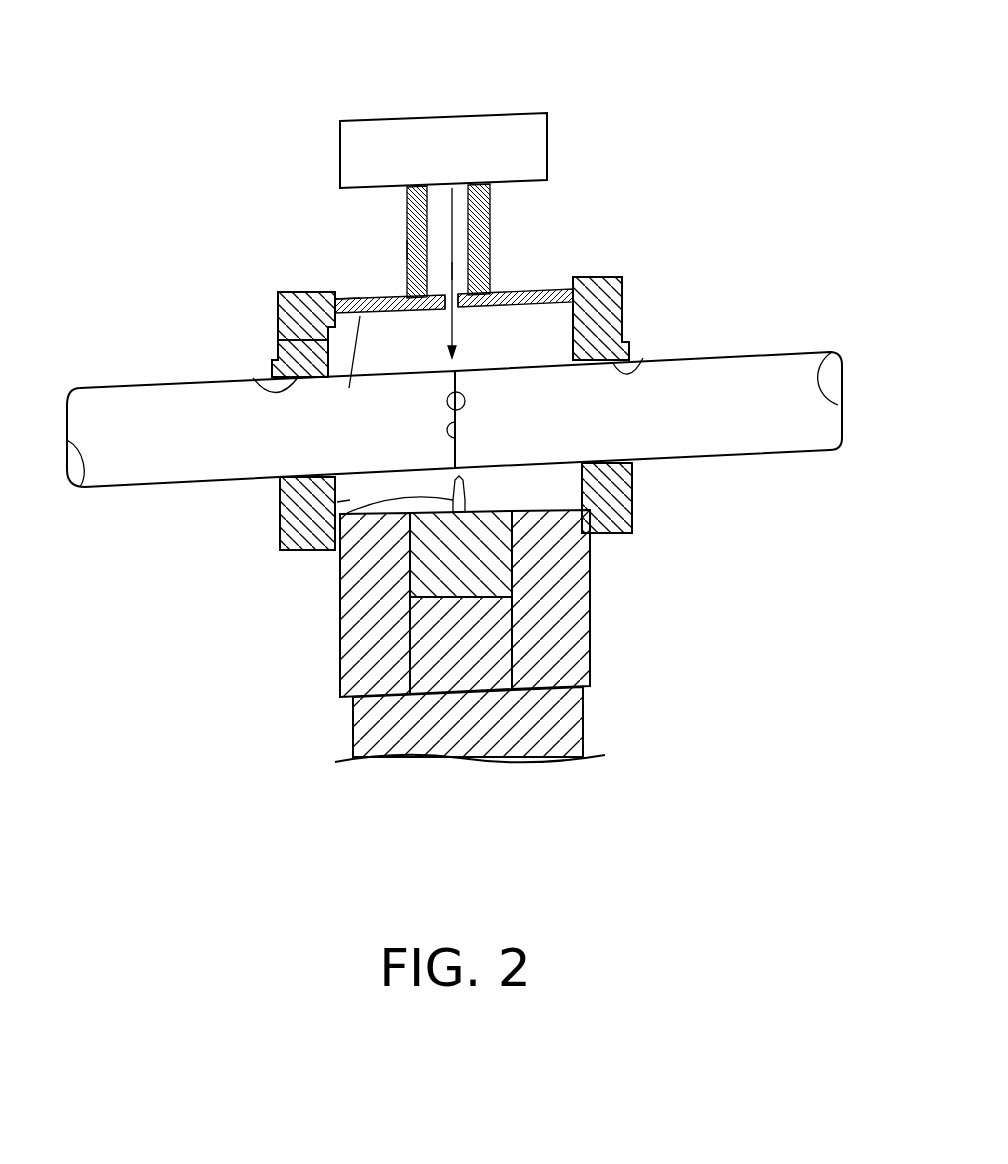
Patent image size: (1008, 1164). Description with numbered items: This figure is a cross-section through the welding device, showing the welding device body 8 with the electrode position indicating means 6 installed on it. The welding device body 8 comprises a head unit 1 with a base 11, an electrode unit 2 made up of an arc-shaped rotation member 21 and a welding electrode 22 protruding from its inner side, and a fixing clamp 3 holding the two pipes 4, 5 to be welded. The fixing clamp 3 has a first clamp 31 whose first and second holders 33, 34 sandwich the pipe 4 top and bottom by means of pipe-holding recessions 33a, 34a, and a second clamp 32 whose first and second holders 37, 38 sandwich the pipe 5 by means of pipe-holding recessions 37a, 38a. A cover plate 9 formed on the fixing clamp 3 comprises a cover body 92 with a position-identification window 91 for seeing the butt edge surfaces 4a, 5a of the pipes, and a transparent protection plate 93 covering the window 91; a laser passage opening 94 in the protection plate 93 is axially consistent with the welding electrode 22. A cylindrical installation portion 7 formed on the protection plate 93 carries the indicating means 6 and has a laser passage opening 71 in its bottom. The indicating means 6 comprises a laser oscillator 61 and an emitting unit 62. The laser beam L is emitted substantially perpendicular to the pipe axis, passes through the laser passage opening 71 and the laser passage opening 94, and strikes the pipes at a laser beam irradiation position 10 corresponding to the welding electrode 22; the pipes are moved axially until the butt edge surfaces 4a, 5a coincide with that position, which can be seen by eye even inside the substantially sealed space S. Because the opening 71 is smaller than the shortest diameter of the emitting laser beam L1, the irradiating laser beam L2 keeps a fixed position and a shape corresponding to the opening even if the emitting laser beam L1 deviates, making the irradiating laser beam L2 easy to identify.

The head unit 1 is at (592, 647).
The electrode unit 2 is at (478, 586).
The fixing clamp 3 is at (661, 273).
The pipe 4 is at (140, 400).
The butt edge surface 4a is at (440, 405).
The pipe 5 is at (772, 375).
The butt edge surface 5a is at (465, 418).
The electrode position indicating means 6 is at (489, 154).
The installation portion 7 is at (406, 252).
The welding device body 8 is at (227, 283).
The cover plate 9 is at (434, 268).
The laser beam irradiation position 10 is at (462, 360).
The base 11 is at (592, 597).
The rotation member 21 is at (500, 548).
The welding electrode 22 is at (400, 578).
The first clamp 31 is at (272, 283).
The second clamp 32 is at (640, 293).
The first holder 33 is at (278, 485).
The pipe-holding recession 33a is at (317, 477).
The second holder 34 is at (282, 347).
The pipe-holding recession 34a is at (255, 382).
The first holder 37 is at (640, 470).
The pipe-holding recession 37a is at (605, 462).
The second holder 38 is at (604, 275).
The pipe-holding recession 38a is at (640, 363).
The laser oscillator 61 is at (549, 122).
The emitting unit 62 is at (491, 203).
The laser passage opening 71 is at (465, 268).
The position-identification window 91 is at (348, 369).
The cover body 92 is at (325, 290).
The transparent protection plate 93 is at (350, 297).
The laser passage opening 94 is at (440, 312).
The laser beam L is at (452, 275).
The emitting laser beam L1 is at (418, 268).
The irradiating laser beam L2 is at (450, 394).
The substantially sealed space S is at (283, 537).